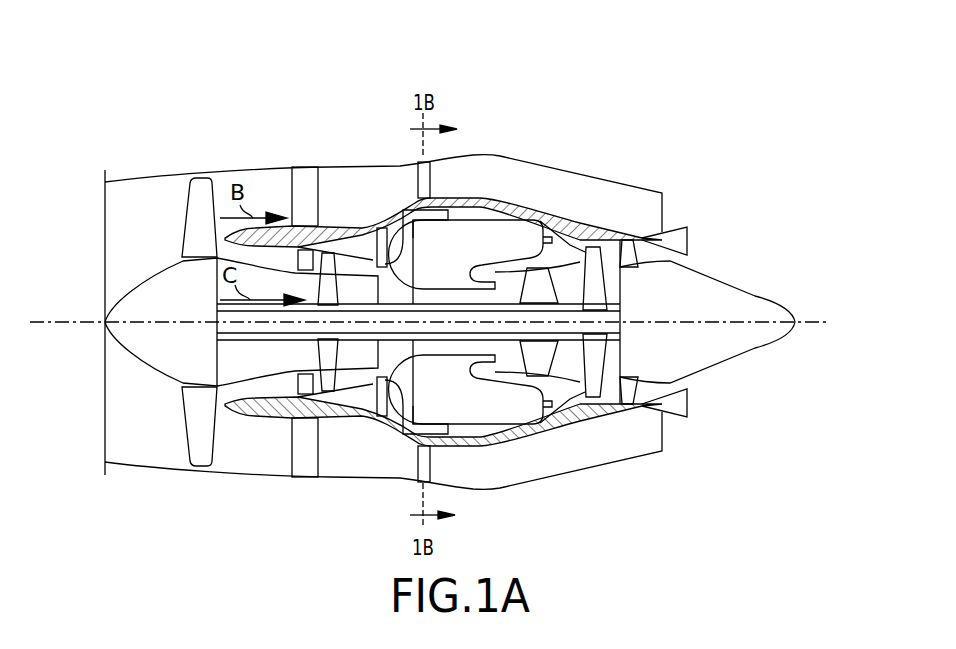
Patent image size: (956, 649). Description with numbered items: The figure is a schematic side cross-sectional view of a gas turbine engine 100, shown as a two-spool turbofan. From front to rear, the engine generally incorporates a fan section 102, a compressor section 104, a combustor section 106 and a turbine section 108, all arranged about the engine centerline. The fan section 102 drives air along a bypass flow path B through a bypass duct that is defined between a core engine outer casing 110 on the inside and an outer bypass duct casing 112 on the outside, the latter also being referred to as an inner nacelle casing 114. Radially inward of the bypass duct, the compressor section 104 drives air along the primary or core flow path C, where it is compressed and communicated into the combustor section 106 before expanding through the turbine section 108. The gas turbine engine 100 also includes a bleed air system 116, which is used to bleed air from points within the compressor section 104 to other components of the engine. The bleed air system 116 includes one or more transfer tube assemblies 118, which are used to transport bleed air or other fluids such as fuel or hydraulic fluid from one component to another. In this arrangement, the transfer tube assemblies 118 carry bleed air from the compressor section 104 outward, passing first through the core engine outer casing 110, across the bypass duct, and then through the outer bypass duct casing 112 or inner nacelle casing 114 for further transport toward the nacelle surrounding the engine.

The gas turbine engine 100 is at (128, 65).
The fan section 102 is at (185, 158).
The compressor section 104 is at (349, 150).
The combustor section 106 is at (512, 146).
The turbine section 108 is at (615, 163).
The core engine outer casing 110 is at (622, 446).
The outer bypass duct casing 112 is at (578, 470).
The inner nacelle casing 114 is at (522, 482).
The bleed air system 116 is at (384, 462).
The transfer tube assemblies 118 is at (415, 180).